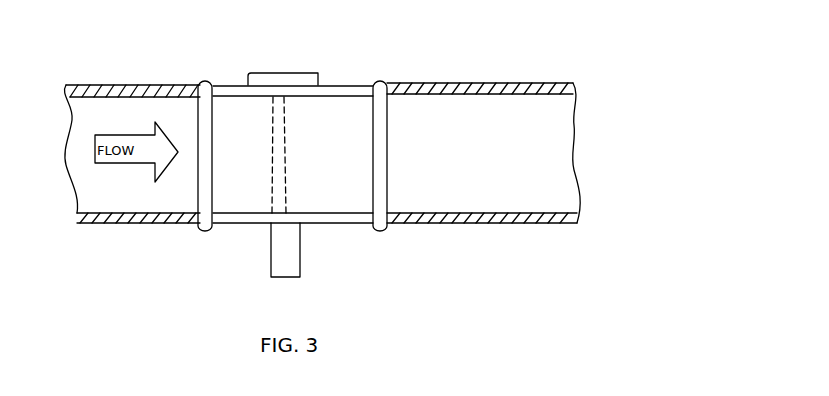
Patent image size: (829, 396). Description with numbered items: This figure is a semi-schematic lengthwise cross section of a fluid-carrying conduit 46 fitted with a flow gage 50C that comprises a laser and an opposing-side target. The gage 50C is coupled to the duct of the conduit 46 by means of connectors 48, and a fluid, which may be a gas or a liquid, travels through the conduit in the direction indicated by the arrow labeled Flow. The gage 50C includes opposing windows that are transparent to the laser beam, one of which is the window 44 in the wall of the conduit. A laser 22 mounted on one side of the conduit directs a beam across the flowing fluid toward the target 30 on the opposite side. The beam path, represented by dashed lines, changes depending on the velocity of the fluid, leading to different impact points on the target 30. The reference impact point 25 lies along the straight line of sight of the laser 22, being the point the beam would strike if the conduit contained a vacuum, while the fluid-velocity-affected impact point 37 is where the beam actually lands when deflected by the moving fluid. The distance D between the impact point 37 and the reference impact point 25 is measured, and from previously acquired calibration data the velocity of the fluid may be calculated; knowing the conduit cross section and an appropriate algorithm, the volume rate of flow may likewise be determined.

The conduit 46 is at (128, 85).
The window 44 is at (230, 82).
The connectors 48 is at (208, 227).
The target 30 is at (243, 72).
The fluid-velocity-affected impact point 37 is at (271, 98).
The reference impact point 25 is at (287, 98).
The laser 22 is at (297, 267).
The gage 50C is at (373, 255).
The distance D is at (250, 58).